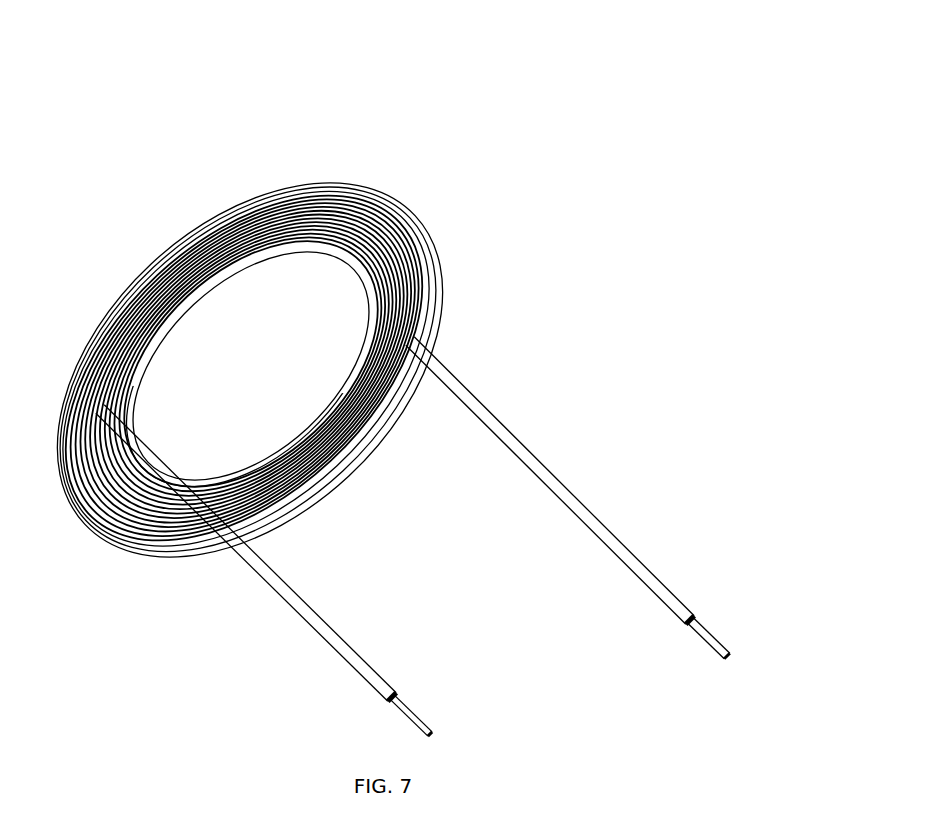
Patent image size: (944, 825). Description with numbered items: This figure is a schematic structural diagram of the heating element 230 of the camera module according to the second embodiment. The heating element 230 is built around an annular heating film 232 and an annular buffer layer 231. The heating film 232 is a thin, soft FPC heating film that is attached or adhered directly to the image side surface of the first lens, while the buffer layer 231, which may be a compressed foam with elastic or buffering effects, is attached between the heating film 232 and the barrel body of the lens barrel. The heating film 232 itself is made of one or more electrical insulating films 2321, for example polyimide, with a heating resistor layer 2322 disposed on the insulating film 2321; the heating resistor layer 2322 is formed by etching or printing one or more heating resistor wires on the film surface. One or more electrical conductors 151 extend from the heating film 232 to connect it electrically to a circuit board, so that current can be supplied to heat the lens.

The heating element 230 is at (271, 325).
The buffer layer 231 is at (440, 292).
The heating film 232 is at (244, 333).
The electrical insulating film 2321 is at (249, 350).
The heating resistor layer 2322 is at (312, 213).
The electrical conductor 151 is at (530, 447).